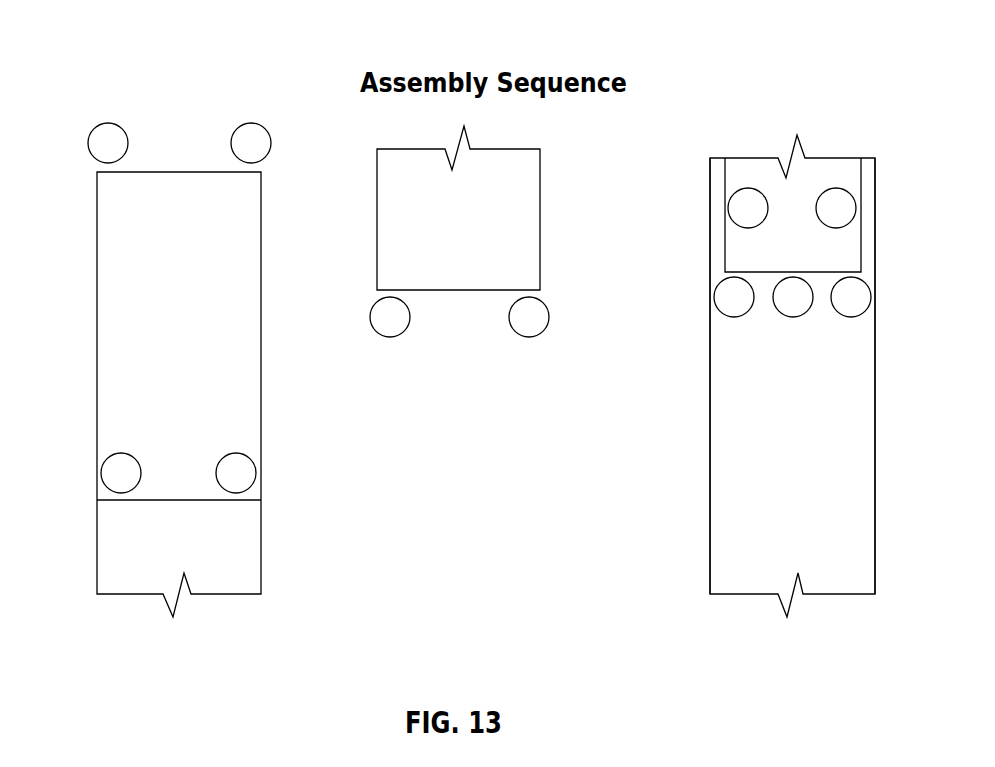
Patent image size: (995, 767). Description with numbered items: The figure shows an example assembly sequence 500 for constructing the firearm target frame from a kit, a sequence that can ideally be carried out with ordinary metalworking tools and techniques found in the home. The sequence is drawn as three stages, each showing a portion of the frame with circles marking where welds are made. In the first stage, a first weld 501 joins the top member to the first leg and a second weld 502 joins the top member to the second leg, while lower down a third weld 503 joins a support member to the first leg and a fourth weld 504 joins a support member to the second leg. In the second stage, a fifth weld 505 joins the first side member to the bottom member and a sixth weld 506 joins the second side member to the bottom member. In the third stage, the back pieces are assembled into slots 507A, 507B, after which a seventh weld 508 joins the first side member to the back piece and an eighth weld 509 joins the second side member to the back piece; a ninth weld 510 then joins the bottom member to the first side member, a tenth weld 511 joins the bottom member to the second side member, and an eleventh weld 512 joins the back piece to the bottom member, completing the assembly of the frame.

The assembly sequence 500 is at (747, 45).
The first weld 501 is at (106, 123).
The second weld 502 is at (242, 125).
The third weld 503 is at (118, 452).
The fourth weld 504 is at (233, 452).
The fifth weld 505 is at (373, 307).
The sixth weld 506 is at (543, 302).
The slot 507A is at (675, 376).
The slot 507B is at (908, 376).
The seventh weld 508 is at (730, 197).
The eighth weld 509 is at (848, 197).
The ninth weld 510 is at (725, 283).
The tenth weld 511 is at (865, 288).
The eleventh weld 512 is at (788, 315).